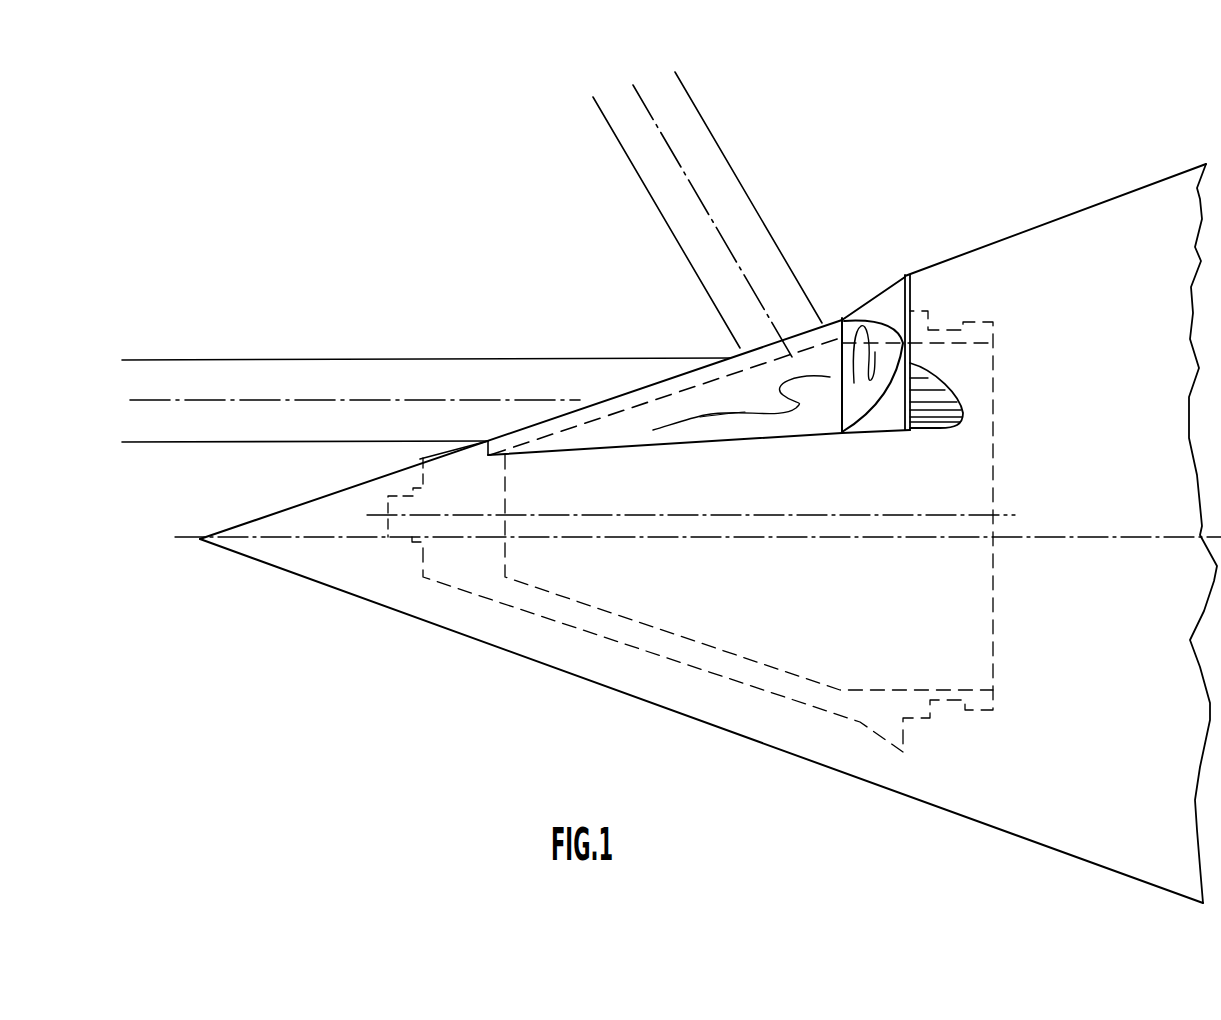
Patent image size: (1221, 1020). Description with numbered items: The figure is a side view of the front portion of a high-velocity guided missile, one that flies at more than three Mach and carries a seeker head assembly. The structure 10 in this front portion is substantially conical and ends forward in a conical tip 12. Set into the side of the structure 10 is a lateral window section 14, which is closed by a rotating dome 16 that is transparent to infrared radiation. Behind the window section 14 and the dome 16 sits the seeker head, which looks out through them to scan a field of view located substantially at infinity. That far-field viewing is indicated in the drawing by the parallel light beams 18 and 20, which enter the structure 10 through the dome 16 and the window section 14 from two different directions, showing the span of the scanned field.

The structure 10 is at (950, 250).
The conical tip 12 is at (280, 527).
The lateral window section 14 is at (807, 437).
The rotating dome 16 is at (613, 410).
The parallel light beam 18 is at (703, 168).
The parallel light beam 20 is at (395, 380).